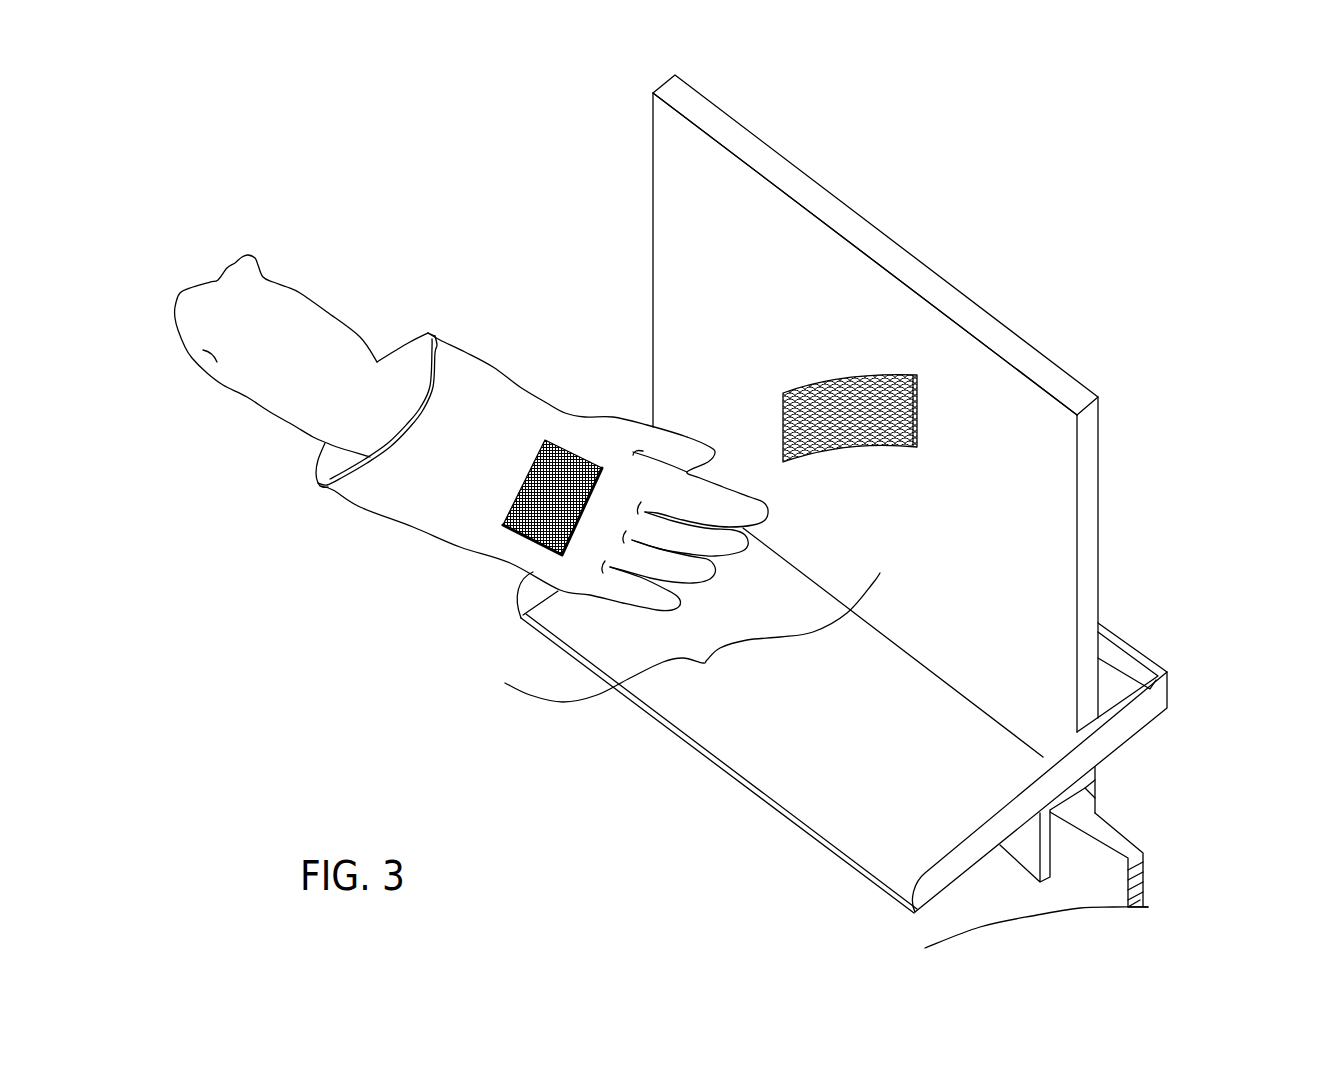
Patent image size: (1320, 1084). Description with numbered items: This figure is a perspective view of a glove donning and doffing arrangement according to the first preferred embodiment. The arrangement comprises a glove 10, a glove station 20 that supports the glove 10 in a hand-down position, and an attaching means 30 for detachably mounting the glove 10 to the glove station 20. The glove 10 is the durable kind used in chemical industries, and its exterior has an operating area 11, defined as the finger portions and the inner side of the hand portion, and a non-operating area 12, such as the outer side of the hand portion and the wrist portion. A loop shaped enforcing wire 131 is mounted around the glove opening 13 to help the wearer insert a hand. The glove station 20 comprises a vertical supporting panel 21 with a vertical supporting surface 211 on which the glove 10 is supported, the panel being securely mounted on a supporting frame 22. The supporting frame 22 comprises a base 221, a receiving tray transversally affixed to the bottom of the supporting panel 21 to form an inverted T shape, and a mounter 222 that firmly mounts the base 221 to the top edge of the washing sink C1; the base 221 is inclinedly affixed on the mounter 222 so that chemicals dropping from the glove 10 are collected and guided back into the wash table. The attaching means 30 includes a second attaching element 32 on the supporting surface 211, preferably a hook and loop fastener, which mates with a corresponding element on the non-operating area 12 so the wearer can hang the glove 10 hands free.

The glove 10 is at (571, 272).
The operating area 11 is at (728, 427).
The non-operating area 12 is at (570, 435).
The glove opening 13 is at (343, 463).
The enforcing wire 131 is at (353, 480).
The glove station 20 is at (1066, 268).
The supporting panel 21 is at (852, 225).
The supporting surface 211 is at (717, 175).
The supporting frame 22 is at (1190, 663).
The base 221 is at (1110, 690).
The mounter 222 is at (1090, 793).
The attaching means 30 is at (774, 720).
The second attaching element 32 is at (530, 542).
The washing sink C1 is at (1092, 882).